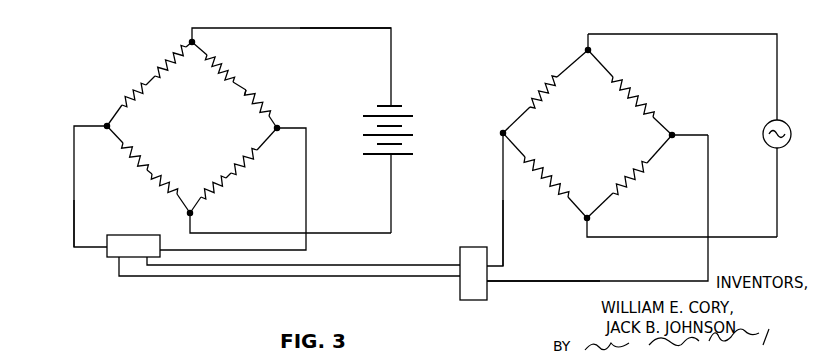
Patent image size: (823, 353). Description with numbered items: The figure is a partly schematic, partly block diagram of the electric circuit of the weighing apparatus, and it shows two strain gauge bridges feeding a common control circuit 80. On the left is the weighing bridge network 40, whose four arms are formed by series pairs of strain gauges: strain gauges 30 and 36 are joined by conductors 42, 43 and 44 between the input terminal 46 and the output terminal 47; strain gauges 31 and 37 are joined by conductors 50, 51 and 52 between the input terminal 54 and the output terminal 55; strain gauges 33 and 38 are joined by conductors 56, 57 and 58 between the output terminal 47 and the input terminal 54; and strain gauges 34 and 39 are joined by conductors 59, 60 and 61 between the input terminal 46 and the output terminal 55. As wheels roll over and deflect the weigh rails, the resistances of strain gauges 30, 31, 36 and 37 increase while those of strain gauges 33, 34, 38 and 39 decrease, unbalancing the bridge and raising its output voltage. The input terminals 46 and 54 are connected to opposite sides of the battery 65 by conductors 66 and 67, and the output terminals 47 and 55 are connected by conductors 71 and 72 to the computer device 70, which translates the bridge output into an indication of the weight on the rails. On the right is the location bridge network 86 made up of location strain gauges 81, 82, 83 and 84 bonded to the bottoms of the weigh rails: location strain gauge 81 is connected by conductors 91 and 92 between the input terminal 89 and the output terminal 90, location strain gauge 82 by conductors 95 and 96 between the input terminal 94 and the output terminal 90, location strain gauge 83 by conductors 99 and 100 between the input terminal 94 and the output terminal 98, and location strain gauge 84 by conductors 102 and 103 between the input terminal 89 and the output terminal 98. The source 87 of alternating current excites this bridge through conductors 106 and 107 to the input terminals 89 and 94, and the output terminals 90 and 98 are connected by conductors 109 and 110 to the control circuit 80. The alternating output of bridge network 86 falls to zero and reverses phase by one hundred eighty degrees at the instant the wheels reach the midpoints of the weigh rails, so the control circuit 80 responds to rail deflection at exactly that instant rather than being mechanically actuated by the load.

The strain gauge 30 is at (162, 59).
The strain gauge 31 is at (245, 161).
The strain gauge 33 is at (129, 175).
The strain gauge 34 is at (219, 61).
The strain gauge 36 is at (133, 88).
The strain gauge 37 is at (222, 189).
The strain gauge 38 is at (160, 187).
The strain gauge 39 is at (254, 94).
The bridge network 40 is at (103, 99).
The conductor 42 is at (191, 50).
The conductor 43 is at (150, 83).
The conductor 44 is at (118, 138).
The input terminal 46 is at (194, 42).
The output terminal 47 is at (107, 131).
The conductor 50 is at (212, 188).
The conductor 51 is at (228, 178).
The conductor 52 is at (275, 128).
The input terminal 54 is at (188, 215).
The output terminal 55 is at (279, 126).
The conductor 56 is at (118, 136).
The conductor 57 is at (150, 162).
The conductor 58 is at (173, 192).
The conductor 59 is at (203, 56).
The conductor 60 is at (242, 92).
The conductor 61 is at (263, 108).
The battery 65 is at (412, 130).
The conductor 66 is at (329, 28).
The conductor 67 is at (392, 210).
The computer device 70 is at (110, 258).
The conductor 71 is at (74, 207).
The conductor 72 is at (306, 190).
The control circuit 80 is at (474, 302).
The location strain gauge 81 is at (545, 170).
The location strain gauge 82 is at (541, 100).
The location strain gauge 83 is at (632, 97).
The location strain gauge 84 is at (636, 183).
The bridge network 86 is at (556, 61).
The source of alternating current 87 is at (789, 125).
The input terminal 89 is at (592, 218).
The output terminal 90 is at (503, 133).
The conductor 91 is at (573, 205).
The conductor 92 is at (515, 148).
The input terminal 94 is at (590, 50).
The conductor 95 is at (569, 68).
The conductor 96 is at (521, 109).
The output terminal 98 is at (673, 134).
The conductor 99 is at (606, 69).
The conductor 100 is at (656, 120).
The conductor 102 is at (665, 146).
The conductor 103 is at (612, 202).
The conductor 106 is at (718, 242).
The conductor 107 is at (718, 34).
The conductor 109 is at (504, 237).
The conductor 110 is at (503, 283).